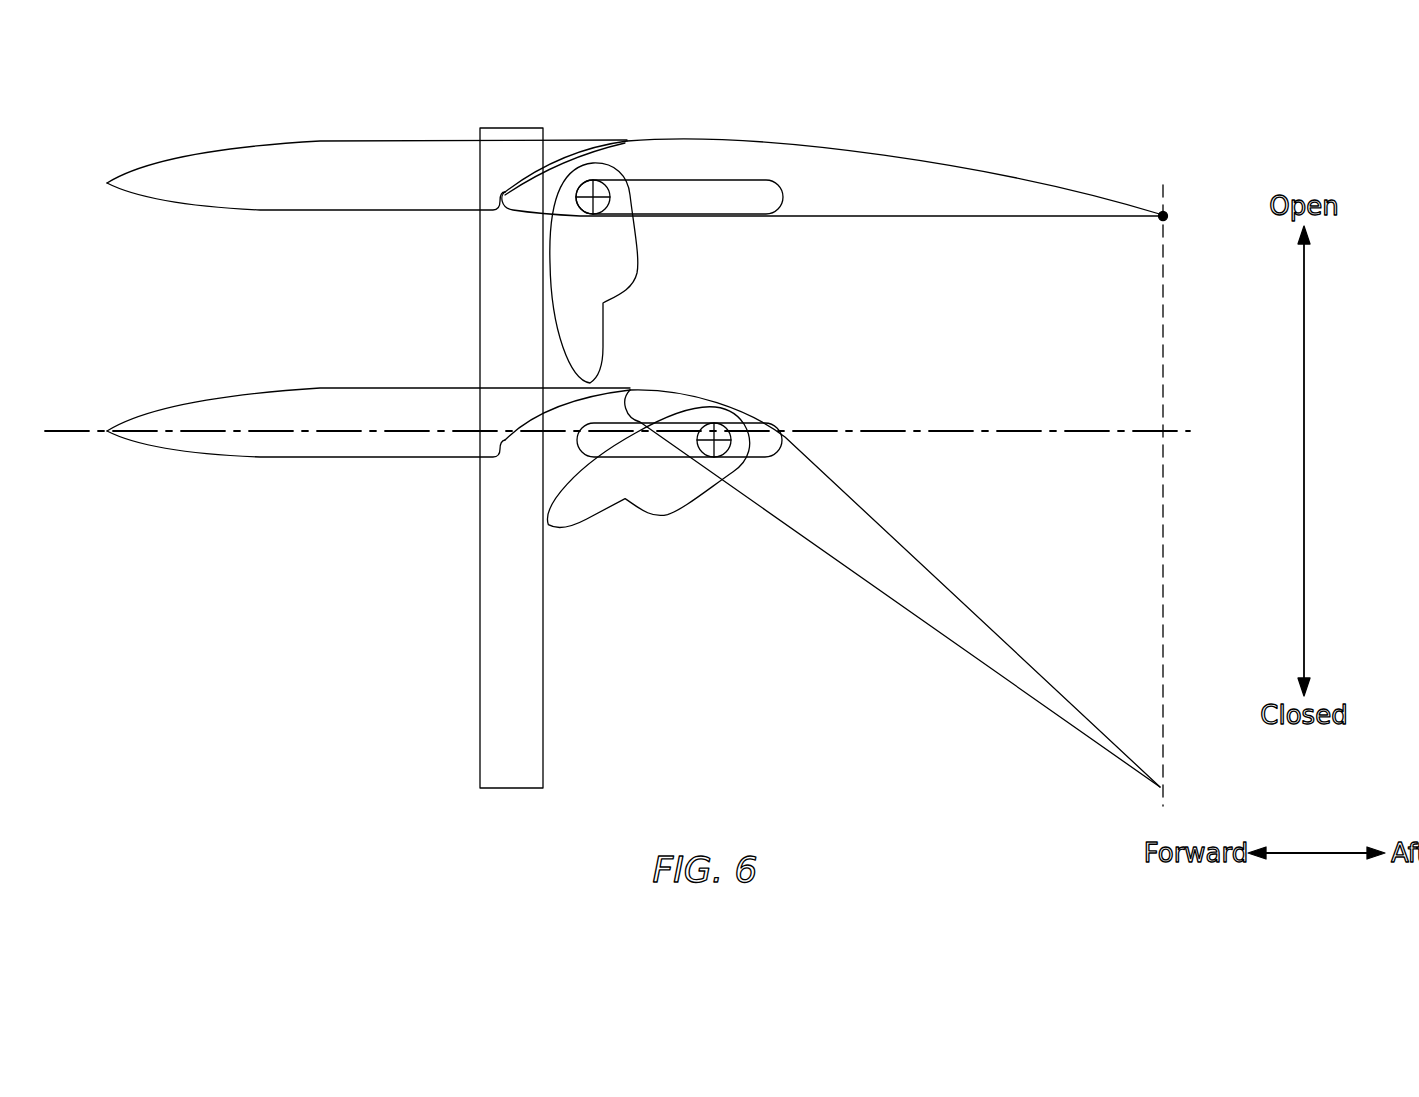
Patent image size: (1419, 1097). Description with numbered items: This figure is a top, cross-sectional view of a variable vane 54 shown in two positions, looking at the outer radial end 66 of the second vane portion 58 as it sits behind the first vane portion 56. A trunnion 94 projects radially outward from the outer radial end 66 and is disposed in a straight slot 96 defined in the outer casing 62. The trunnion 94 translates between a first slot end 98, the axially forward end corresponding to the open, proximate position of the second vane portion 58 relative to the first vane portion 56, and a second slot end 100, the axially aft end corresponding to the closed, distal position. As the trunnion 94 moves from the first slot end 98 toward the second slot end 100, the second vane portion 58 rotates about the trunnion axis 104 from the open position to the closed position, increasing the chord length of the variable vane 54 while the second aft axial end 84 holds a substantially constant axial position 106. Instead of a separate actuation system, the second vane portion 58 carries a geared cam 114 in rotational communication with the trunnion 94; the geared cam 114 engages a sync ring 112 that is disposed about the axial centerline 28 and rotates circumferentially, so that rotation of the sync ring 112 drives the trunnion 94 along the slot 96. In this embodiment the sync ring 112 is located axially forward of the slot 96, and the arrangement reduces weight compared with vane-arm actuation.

The axial centerline 28 is at (243, 442).
The variable vane 54 is at (1076, 96).
The first vane portion 56 is at (300, 131).
The second vane portion 58 is at (852, 139).
The outer casing 62 is at (613, 458).
The outer radial end 66 is at (953, 182).
The second aft axial end 84 is at (1170, 210).
The trunnion 94 is at (626, 180).
The slot 96 is at (650, 455).
The first slot end 98 is at (570, 444).
The second slot end 100 is at (799, 440).
The trunnion axis 104 is at (580, 152).
The axial position 106 is at (1165, 696).
The sync ring 112 is at (482, 305).
The geared cam 114 is at (638, 256).